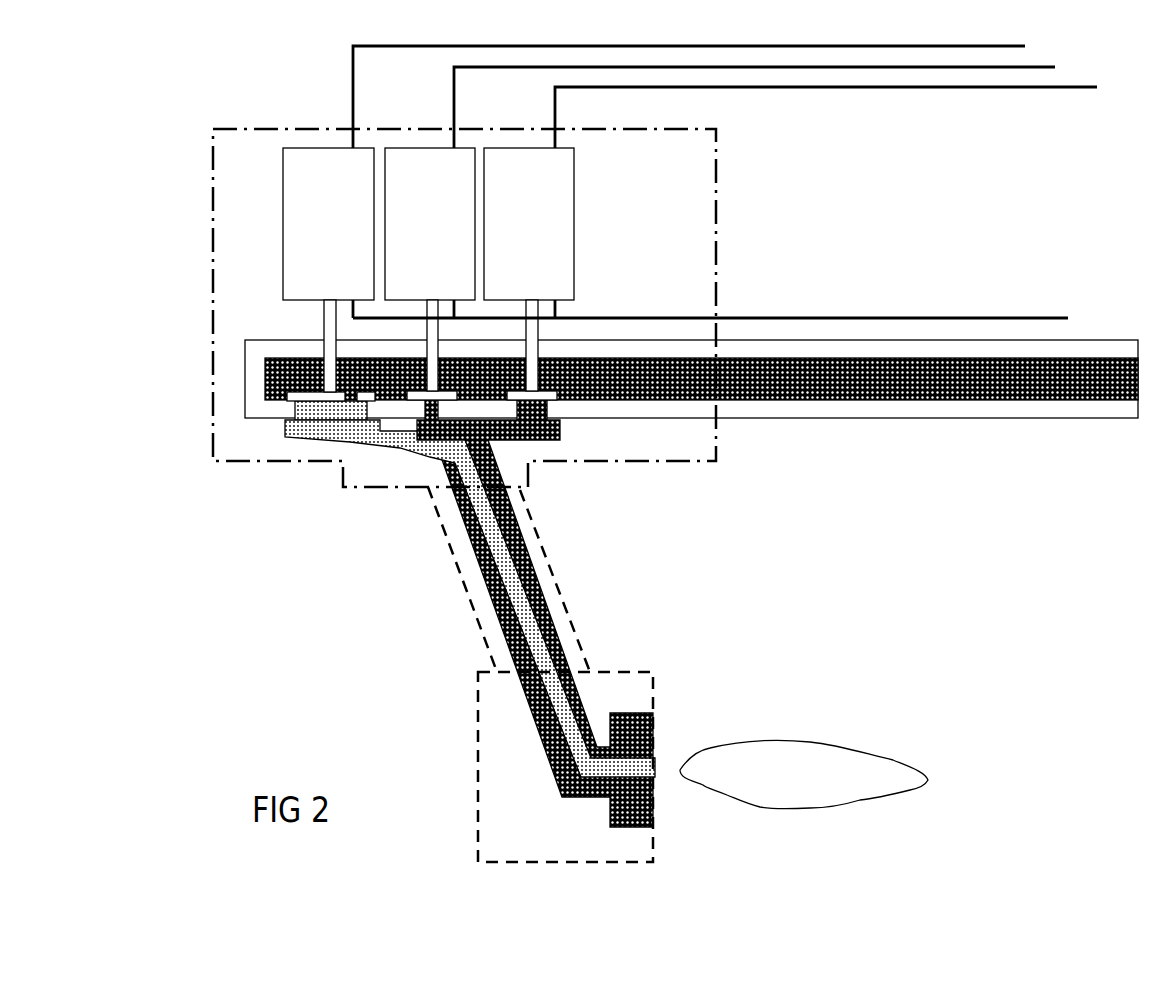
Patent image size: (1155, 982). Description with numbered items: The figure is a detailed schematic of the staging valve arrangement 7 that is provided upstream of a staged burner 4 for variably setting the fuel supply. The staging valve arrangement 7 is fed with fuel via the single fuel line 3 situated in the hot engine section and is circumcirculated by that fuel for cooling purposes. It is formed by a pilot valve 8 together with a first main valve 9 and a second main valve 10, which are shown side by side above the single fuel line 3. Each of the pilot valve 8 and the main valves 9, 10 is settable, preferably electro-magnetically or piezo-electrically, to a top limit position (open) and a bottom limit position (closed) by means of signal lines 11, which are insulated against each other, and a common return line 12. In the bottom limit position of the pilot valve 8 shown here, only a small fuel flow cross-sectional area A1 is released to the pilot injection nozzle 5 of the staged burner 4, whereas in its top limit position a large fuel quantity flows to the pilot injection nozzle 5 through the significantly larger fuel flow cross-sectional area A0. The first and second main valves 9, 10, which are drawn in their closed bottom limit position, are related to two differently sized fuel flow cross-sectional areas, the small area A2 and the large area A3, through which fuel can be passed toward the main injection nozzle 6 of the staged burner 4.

The single fuel line 3 is at (1022, 405).
The staged burner 4 is at (478, 762).
The pilot injection nozzle 5 is at (655, 770).
The main injection nozzle 6 is at (653, 722).
The staging valve arrangement 7 is at (212, 252).
The pilot valve 8 is at (328, 270).
The first main valve 9 is at (430, 269).
The second main valve 10 is at (529, 269).
The signal lines 11 is at (813, 88).
The common return line 12 is at (945, 318).
The large fuel flow cross-sectional area A0 is at (295, 412).
The small fuel flow cross-sectional area A1 is at (347, 400).
The small fuel flow cross-sectional area of first main valve A2 is at (420, 413).
The large fuel flow cross-sectional area of second main valve A3 is at (550, 407).